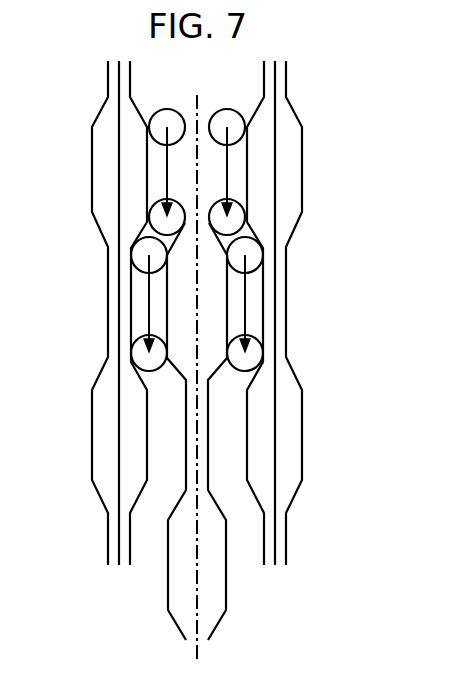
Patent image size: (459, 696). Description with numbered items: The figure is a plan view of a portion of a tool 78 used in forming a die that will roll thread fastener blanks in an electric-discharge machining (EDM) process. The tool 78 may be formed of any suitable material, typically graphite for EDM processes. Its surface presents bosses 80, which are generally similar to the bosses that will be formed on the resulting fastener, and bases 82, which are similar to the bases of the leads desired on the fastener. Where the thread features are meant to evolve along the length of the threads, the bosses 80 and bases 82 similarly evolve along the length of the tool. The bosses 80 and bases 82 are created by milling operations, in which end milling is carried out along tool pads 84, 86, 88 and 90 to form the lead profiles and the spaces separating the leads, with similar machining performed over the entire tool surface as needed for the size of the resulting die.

The tool 78 is at (349, 193).
The bosses 80 is at (103, 204).
The bases 82 is at (156, 183).
The tool pad 84 is at (163, 165).
The tool pad 86 is at (230, 168).
The tool pad 88 is at (148, 322).
The tool pad 90 is at (248, 297).